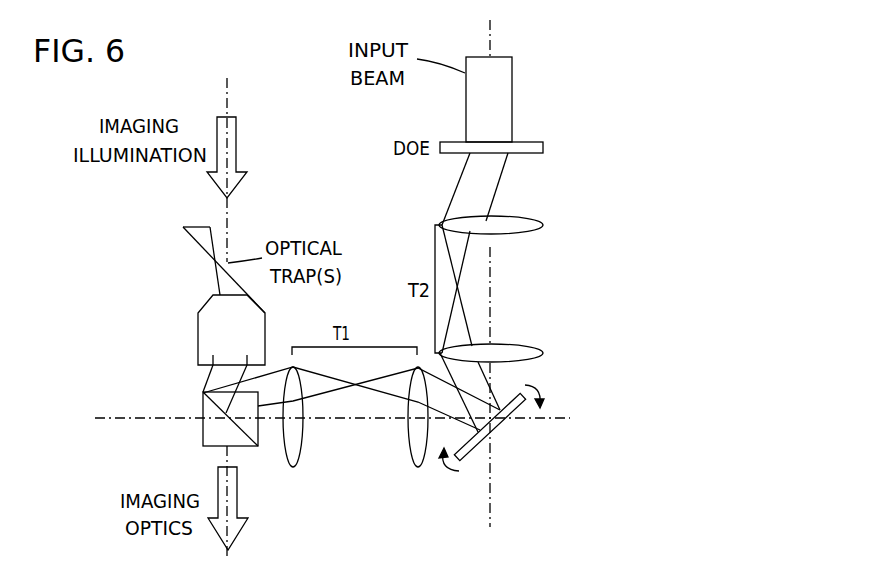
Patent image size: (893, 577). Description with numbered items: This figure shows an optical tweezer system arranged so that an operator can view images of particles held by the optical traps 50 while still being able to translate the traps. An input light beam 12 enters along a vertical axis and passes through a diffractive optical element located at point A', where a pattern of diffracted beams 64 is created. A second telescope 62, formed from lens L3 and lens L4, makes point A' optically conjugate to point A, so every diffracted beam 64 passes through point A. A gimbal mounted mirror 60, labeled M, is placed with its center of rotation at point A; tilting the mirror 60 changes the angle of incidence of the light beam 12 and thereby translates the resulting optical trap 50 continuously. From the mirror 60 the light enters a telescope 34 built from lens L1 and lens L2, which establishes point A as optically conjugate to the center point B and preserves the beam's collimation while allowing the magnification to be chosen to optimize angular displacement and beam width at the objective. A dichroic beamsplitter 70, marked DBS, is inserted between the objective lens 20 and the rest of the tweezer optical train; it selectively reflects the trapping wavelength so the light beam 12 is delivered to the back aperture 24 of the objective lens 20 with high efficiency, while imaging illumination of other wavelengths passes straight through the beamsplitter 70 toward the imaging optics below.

The light beam 12 is at (505, 80).
The objective lens 20 is at (260, 324).
The back aperture 24 is at (212, 367).
The telescope 34 is at (352, 347).
The optical trap 50 is at (210, 262).
The gimbal mounted mirror 60 is at (475, 447).
The second telescope 62 is at (433, 260).
The diffracted beams 64 is at (450, 408).
The dichroic beamsplitter 70 is at (243, 446).
The center point B is at (212, 371).
The point A is at (516, 438).
The point A' is at (507, 133).
The mirror M is at (474, 501).
The dichroic beam splitter DBS is at (205, 437).
The lens L1 is at (418, 431).
The lens L2 is at (293, 431).
The lens L3 is at (506, 226).
The lens L4 is at (506, 353).